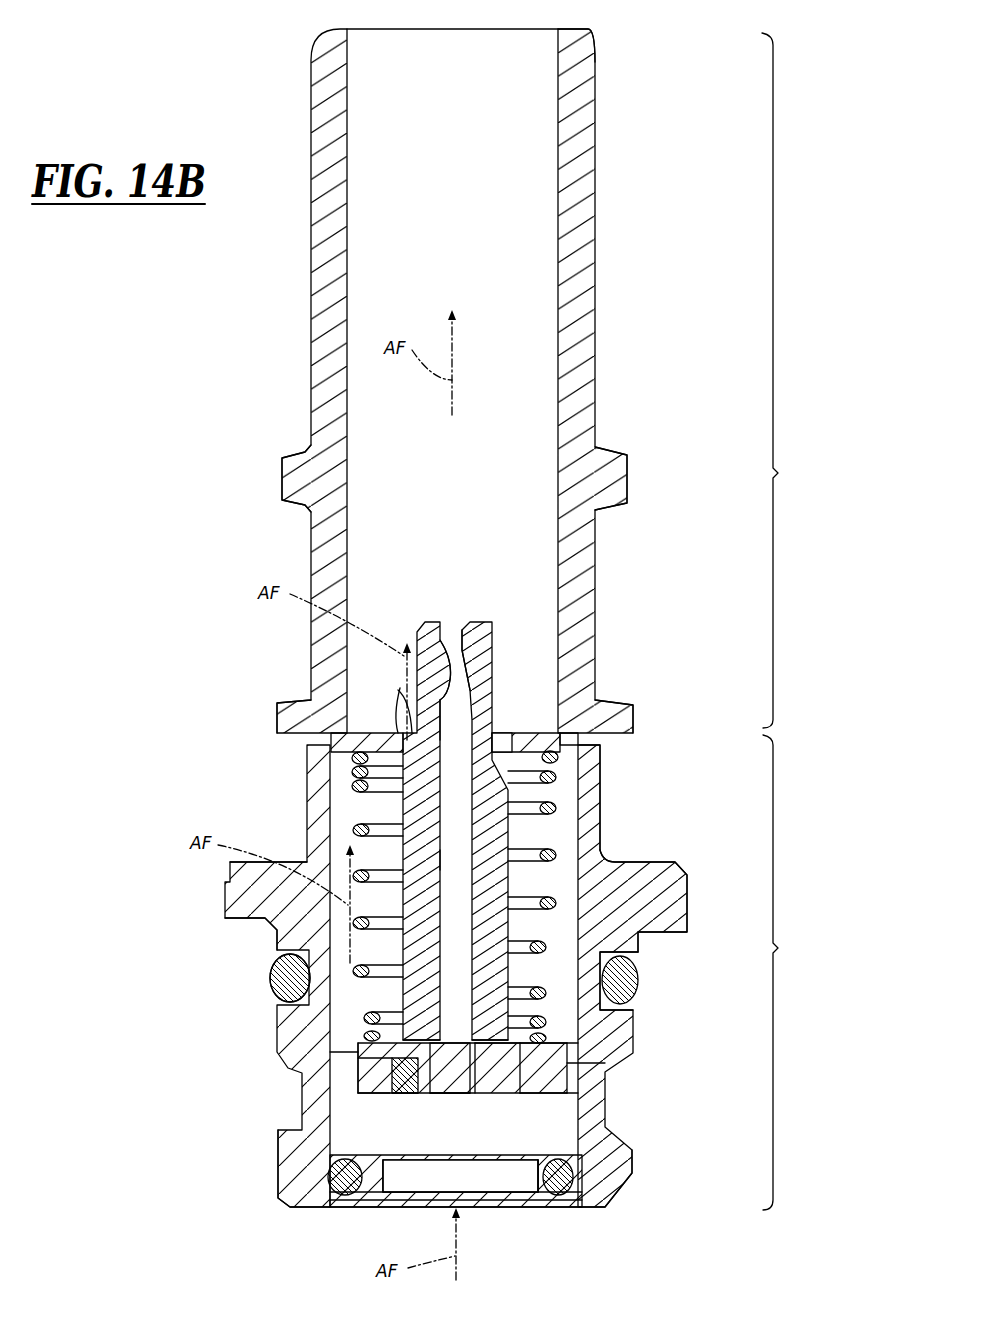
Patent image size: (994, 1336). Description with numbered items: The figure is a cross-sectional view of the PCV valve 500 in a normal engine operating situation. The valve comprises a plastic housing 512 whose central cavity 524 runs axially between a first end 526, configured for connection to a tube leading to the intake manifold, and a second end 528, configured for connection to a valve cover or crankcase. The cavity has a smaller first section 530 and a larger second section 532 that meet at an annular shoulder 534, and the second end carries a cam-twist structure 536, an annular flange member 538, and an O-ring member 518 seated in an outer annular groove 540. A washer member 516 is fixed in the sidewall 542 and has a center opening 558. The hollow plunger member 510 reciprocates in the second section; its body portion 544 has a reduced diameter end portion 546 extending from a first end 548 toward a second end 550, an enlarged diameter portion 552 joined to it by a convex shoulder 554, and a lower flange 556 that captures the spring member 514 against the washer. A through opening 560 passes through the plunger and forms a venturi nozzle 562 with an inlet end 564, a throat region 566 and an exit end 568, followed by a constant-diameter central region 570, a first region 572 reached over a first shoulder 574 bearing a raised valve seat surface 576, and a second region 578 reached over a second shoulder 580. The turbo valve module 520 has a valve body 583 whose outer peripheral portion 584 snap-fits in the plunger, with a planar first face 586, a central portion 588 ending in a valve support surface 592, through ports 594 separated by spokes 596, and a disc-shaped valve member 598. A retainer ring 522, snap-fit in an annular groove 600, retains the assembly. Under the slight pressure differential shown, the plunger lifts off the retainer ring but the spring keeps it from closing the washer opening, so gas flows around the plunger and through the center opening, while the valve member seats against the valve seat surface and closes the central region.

The PCV valve 500 is at (626, 116).
The plunger member 510 is at (562, 805).
The housing 512 is at (582, 232).
The spring member 514 is at (602, 852).
The washer member 516 is at (598, 738).
The O-ring member 518 is at (641, 984).
The turbo valve module 520 is at (522, 1112).
The retainer ring 522 is at (590, 1175).
The cavity 524 is at (404, 70).
The first end 526 is at (565, 30).
The second end 528 is at (612, 1208).
The first section 530 is at (790, 380).
The second section 532 is at (791, 972).
The annular shoulder 534 is at (352, 744).
The cam-twist structure 536 is at (303, 1103).
The annular flange member 538 is at (628, 480).
The outer annular groove 540 is at (490, 1040).
The sidewall 542 is at (338, 800).
The body portion 544 is at (563, 828).
The reduced diameter end portion 546 is at (584, 700).
The first end 548 is at (473, 617).
The second end 550 is at (545, 1100).
The enlarged diameter portion 552 is at (688, 900).
The convex shoulder 554 is at (560, 762).
The lower flange 556 is at (300, 1074).
The center opening 558 is at (396, 705).
The through opening 560 is at (455, 598).
The venturi nozzle 562 is at (489, 628).
The inlet end 564 is at (445, 615).
The throat region 566 is at (437, 645).
The exit end 568 is at (400, 688).
The central region 570 is at (447, 857).
The first region 572 is at (482, 1093).
The first shoulder 574 is at (272, 968).
The valve seat surface 576 is at (290, 978).
The second region 578 is at (398, 1060).
The second shoulder 580 is at (600, 1070).
The valve body 583 is at (290, 1052).
The outer peripheral portion 584 is at (598, 1092).
The first face 586 is at (416, 1093).
The central portion 588 is at (455, 1093).
The valve support surface 592 is at (617, 1012).
The through ports 594 is at (624, 1067).
The spokes 596 is at (622, 1035).
The valve member 598 is at (627, 960).
The annular groove 600 is at (336, 1186).